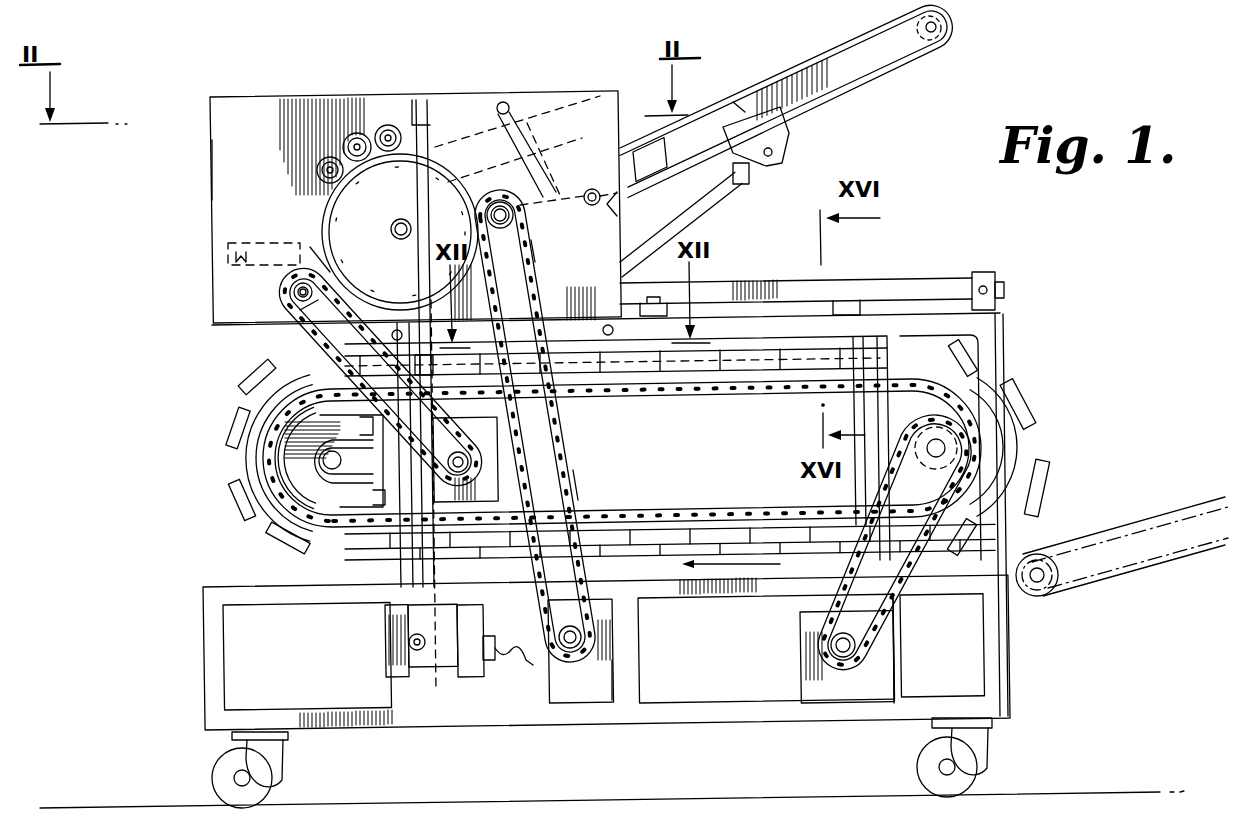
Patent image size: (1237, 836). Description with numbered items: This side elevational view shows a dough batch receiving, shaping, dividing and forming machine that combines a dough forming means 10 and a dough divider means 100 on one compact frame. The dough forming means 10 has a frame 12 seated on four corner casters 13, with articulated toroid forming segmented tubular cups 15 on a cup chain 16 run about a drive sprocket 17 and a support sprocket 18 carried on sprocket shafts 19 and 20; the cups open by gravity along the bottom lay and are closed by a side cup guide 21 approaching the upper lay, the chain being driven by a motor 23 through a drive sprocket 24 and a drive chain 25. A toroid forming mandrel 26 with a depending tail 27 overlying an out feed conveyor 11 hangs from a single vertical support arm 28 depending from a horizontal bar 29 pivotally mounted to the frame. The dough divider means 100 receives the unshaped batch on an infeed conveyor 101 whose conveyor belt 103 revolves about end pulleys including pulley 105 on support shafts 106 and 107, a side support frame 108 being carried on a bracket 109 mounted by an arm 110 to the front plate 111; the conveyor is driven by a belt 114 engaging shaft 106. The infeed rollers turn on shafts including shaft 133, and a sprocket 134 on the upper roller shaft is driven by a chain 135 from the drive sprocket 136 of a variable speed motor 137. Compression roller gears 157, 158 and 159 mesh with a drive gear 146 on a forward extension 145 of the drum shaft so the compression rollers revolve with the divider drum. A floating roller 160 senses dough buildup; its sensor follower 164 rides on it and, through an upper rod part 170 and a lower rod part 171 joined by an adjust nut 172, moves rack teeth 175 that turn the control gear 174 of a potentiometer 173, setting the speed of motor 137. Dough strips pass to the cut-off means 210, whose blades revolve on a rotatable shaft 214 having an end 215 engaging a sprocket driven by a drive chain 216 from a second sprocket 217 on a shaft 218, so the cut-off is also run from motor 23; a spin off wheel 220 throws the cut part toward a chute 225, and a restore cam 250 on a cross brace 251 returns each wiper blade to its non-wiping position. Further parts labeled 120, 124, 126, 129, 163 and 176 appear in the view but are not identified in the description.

The dough forming means 10 is at (1025, 312).
The out feed conveyor 11 is at (1172, 558).
The frame 12 is at (1010, 672).
The corner casters 13 is at (255, 762).
The articulated toroid forming segmented tubular cups 15 is at (1024, 398).
The cup chain 16 is at (756, 510).
The drive sprocket 17 is at (938, 562).
The support sprocket 18 is at (300, 497).
The sprocket shaft 19 is at (948, 435).
The sprocket shaft 20 is at (290, 460).
The side cup guide 21 is at (262, 540).
The motor 23 is at (856, 688).
The drive sprocket 24 is at (822, 645).
The drive chain 25 is at (790, 605).
The toroid forming mandrel 26 is at (466, 330).
The depending tail 27 is at (1048, 502).
The single vertical support arm 28 is at (535, 325).
The horizontal bar 29 is at (906, 282).
The dough divider means 100 is at (212, 88).
The infeed conveyor 101 is at (860, 99).
The conveyor belt 103 is at (734, 101).
The end pulley 105 is at (907, 66).
The support shaft 106 is at (620, 199).
The support shaft 107 is at (950, 24).
The side support frame 108 is at (821, 72).
The bracket 109 is at (790, 128).
The arm 110 is at (712, 195).
The front plate 111 is at (212, 110).
The belt 114 is at (531, 153).
The arm 120 is at (597, 95).
The link 124 is at (537, 108).
The sprocket 126 is at (588, 206).
The pivot 129 is at (504, 102).
The shaft 133 is at (462, 145).
The sprocket 134 is at (554, 249).
The chain 135 is at (580, 490).
The drive sprocket 136 is at (569, 655).
The variable speed motor 137 is at (592, 660).
The forward extension 145 is at (398, 218).
The drive gear 146 is at (360, 212).
The compression roller gear 157 is at (387, 124).
The compression roller gear 158 is at (350, 140).
The compression roller gear 159 is at (318, 166).
The floating roller 160 is at (440, 97).
The gear 163 is at (474, 210).
The sensor follower 164 is at (434, 98).
The upper rod part 170 is at (383, 262).
The lower rod part 171 is at (430, 477).
The adjust nut 172 is at (335, 460).
The potentiometer 173 is at (466, 670).
The control gear 174 is at (390, 648).
The rack teeth 175 is at (428, 680).
The switch 176 is at (518, 667).
The cut-off means 210 is at (283, 292).
The rotatable shaft 214 is at (298, 296).
The shaft end 215 is at (307, 306).
The drive chain 216 is at (405, 362).
The second sprocket 217 is at (465, 437).
The shaft 218 is at (487, 463).
The spin off wheel 220 is at (312, 252).
The chute 225 is at (250, 385).
The restore cam 250 is at (225, 262).
The cross brace 251 is at (238, 258).